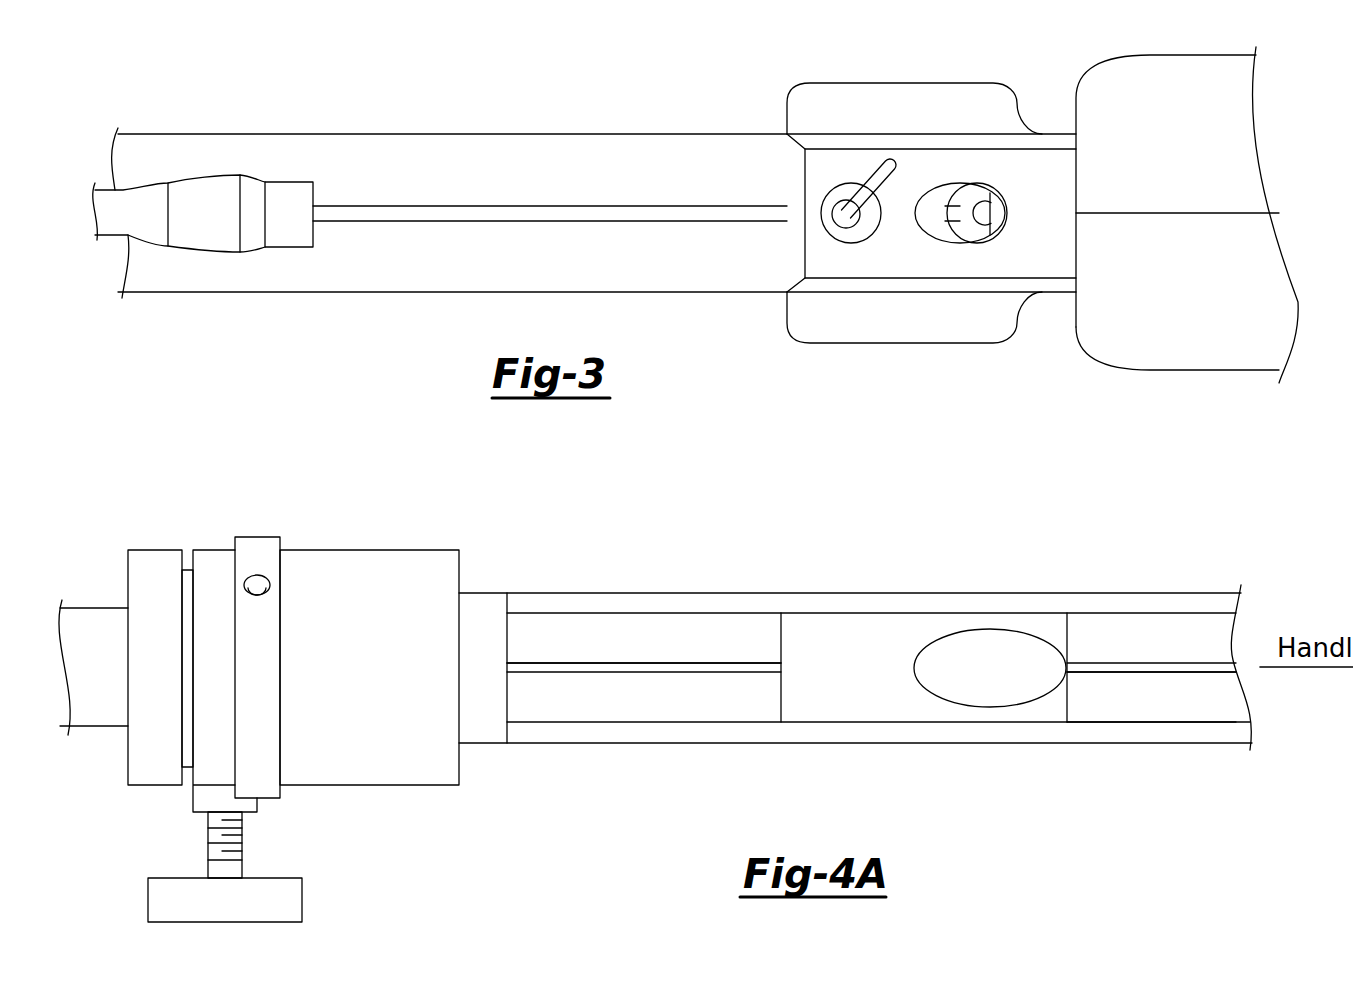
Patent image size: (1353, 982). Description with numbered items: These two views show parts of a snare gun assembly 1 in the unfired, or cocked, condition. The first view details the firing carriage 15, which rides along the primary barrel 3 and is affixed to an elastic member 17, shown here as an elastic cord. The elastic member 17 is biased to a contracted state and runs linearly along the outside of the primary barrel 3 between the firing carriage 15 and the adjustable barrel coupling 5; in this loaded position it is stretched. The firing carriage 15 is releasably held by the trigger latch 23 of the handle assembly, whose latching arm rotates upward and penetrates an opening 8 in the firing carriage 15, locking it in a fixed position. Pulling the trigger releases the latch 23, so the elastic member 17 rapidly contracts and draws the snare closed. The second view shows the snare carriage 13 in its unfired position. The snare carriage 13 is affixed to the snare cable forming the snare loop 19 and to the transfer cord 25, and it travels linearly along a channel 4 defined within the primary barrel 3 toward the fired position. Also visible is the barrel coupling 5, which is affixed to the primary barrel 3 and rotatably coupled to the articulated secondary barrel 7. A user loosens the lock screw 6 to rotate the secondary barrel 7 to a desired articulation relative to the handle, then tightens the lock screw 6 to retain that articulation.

In FIG. 3, the snare gun assembly 1 is at (1207, 370).
In FIG. 3, the primary barrel assembly 3 is at (270, 292).
In FIG. 4A, the primary barrel assembly 3 is at (1138, 593).
In FIG. 4A, the channel 4 is at (1108, 707).
In FIG. 4A, the adjustable barrel coupling 5 is at (257, 537).
In FIG. 4A, the lock screw 6 is at (302, 898).
In FIG. 4A, the articulated secondary barrel assembly 7 is at (95, 725).
In FIG. 3, the opening 8 is at (937, 227).
In FIG. 4A, the snare carriage 13 is at (997, 653).
In FIG. 3, the firing carriage 15 is at (912, 343).
In FIG. 3, the elastic member 17 is at (290, 181).
In FIG. 4A, the snare loop 19 is at (653, 672).
In FIG. 3, the trigger latch 23 is at (968, 213).
In FIG. 4A, the transfer cord 25 is at (1198, 667).